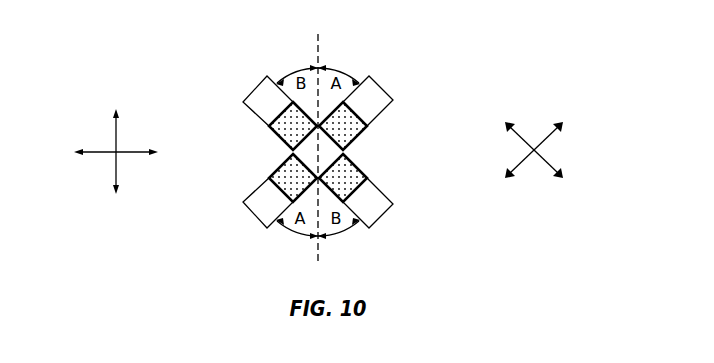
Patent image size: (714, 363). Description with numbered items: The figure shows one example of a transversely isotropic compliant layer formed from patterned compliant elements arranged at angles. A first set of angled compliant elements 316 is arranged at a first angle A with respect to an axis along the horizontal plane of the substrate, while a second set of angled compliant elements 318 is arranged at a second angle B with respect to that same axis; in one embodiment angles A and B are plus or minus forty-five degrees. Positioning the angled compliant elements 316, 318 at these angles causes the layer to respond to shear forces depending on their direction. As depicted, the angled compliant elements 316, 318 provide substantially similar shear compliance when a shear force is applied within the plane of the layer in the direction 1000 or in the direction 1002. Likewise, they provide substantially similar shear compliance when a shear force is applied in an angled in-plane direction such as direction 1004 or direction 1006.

The first set of angled compliant elements 316 is at (367, 127).
The second set of angled compliant elements 318 is at (269, 127).
The direction 1000 is at (113, 130).
The direction 1002 is at (88, 153).
The angled direction 1004 is at (518, 136).
The angled direction 1006 is at (549, 137).